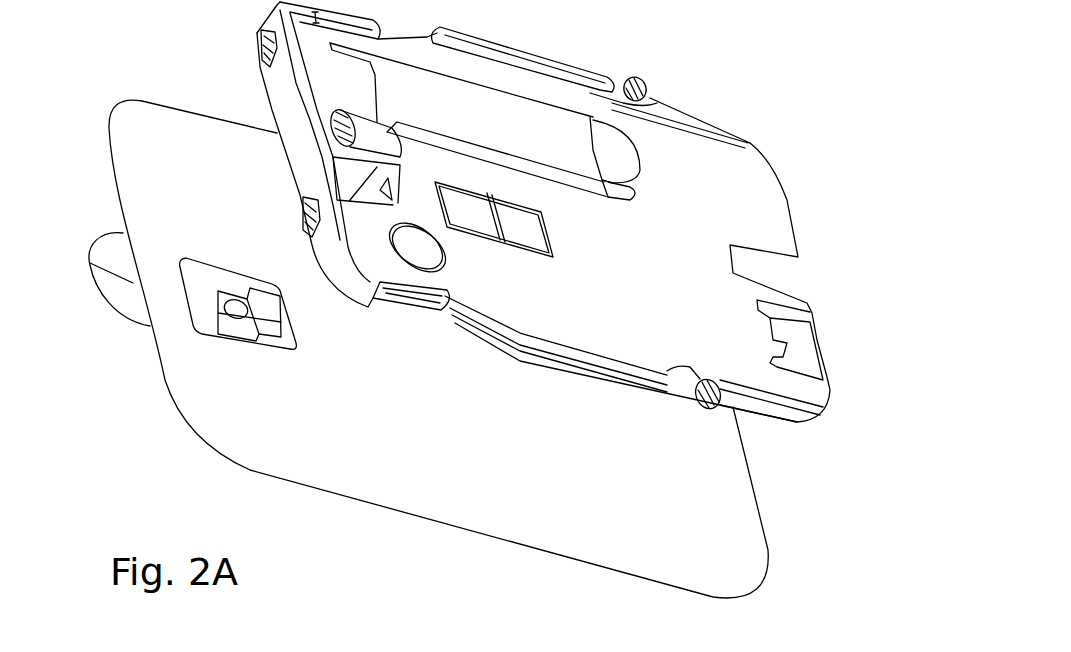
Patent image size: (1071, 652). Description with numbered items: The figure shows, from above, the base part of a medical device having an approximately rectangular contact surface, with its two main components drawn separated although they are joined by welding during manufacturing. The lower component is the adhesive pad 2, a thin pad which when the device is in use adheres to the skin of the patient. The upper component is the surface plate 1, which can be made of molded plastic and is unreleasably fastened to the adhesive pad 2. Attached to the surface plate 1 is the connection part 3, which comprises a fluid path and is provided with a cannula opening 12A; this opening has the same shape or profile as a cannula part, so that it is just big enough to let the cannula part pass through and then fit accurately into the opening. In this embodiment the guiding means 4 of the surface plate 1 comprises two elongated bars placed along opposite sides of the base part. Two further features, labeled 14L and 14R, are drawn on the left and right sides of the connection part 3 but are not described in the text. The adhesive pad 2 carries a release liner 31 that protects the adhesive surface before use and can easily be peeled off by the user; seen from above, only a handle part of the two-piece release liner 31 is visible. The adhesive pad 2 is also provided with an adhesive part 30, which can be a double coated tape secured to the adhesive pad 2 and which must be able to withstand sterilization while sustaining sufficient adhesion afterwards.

The surface plate 1 is at (580, 232).
The adhesive pad 2 is at (438, 349).
The connection part 3 is at (353, 156).
The guiding means 4 is at (535, 60).
The cannula opening 12A is at (372, 123).
The left clip 14L is at (262, 42).
The right clip 14R is at (313, 212).
The adhesive part 30 is at (217, 325).
The release liner 31 is at (125, 293).